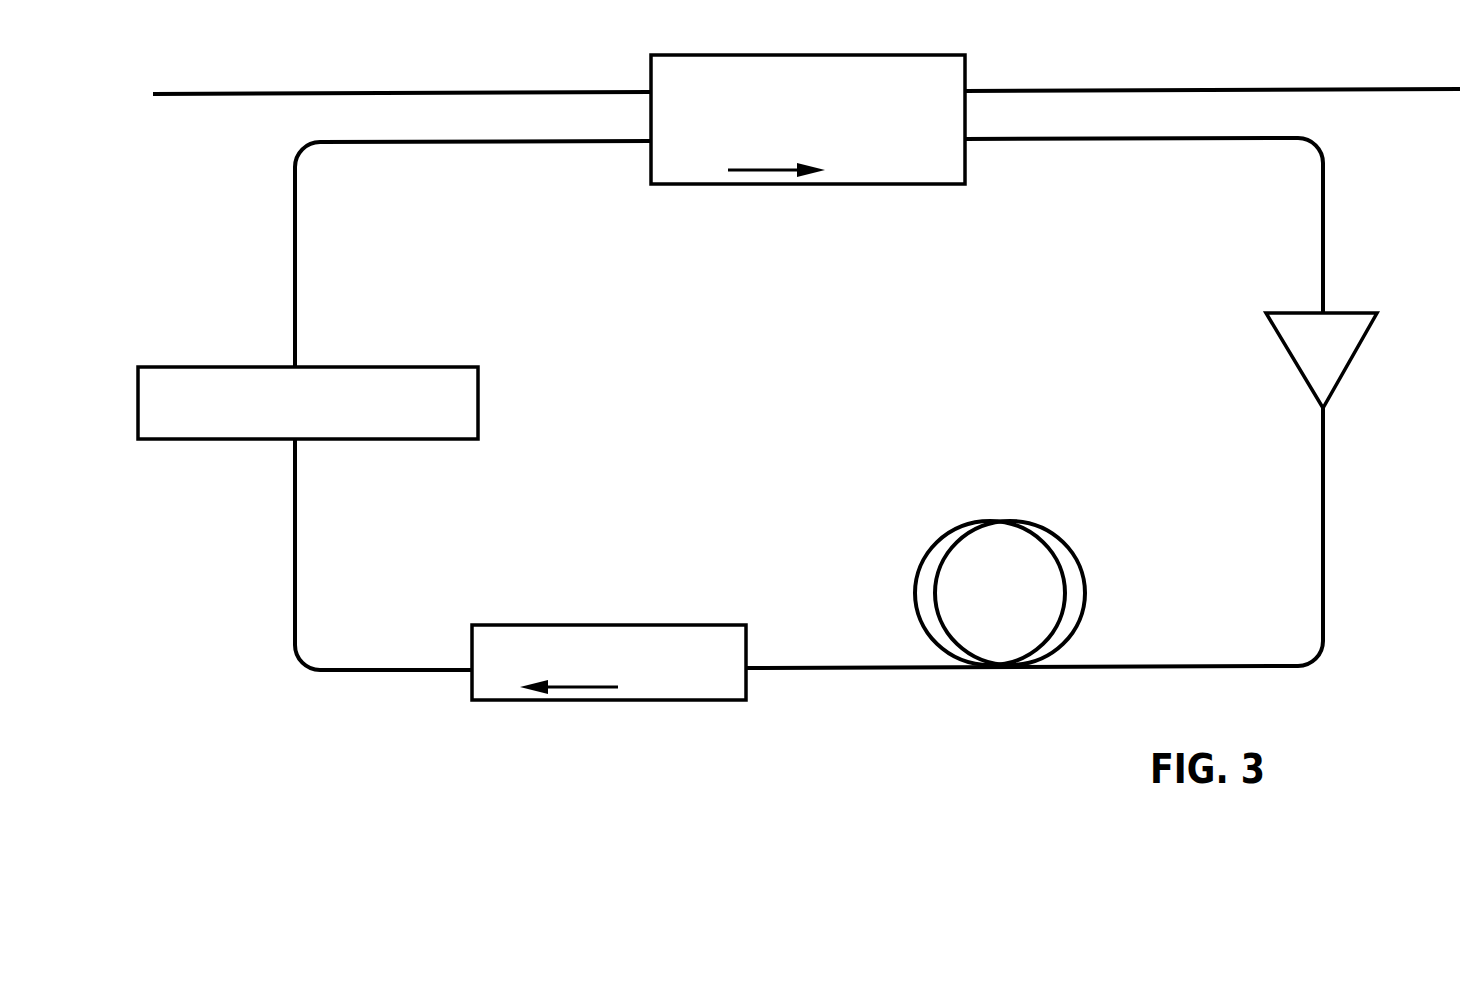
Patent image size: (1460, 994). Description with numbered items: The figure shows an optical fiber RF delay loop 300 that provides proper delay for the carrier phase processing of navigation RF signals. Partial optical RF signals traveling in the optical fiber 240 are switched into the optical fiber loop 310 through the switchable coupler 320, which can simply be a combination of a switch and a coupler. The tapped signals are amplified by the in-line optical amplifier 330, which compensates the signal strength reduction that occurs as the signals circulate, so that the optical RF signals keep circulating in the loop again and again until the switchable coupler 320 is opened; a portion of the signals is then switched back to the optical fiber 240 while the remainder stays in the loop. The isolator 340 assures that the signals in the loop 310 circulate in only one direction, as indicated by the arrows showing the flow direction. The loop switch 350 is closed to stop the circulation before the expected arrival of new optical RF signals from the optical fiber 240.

The optical fiber 240 is at (806, 76).
The optical fiber RF delay loop 300 is at (1459, 657).
The optical fiber loop 310 is at (809, 404).
The switchable coupler 320 is at (808, 95).
The in-line optical amplifier 330 is at (1353, 360).
The isolator 340 is at (609, 689).
The loop switch 350 is at (308, 382).